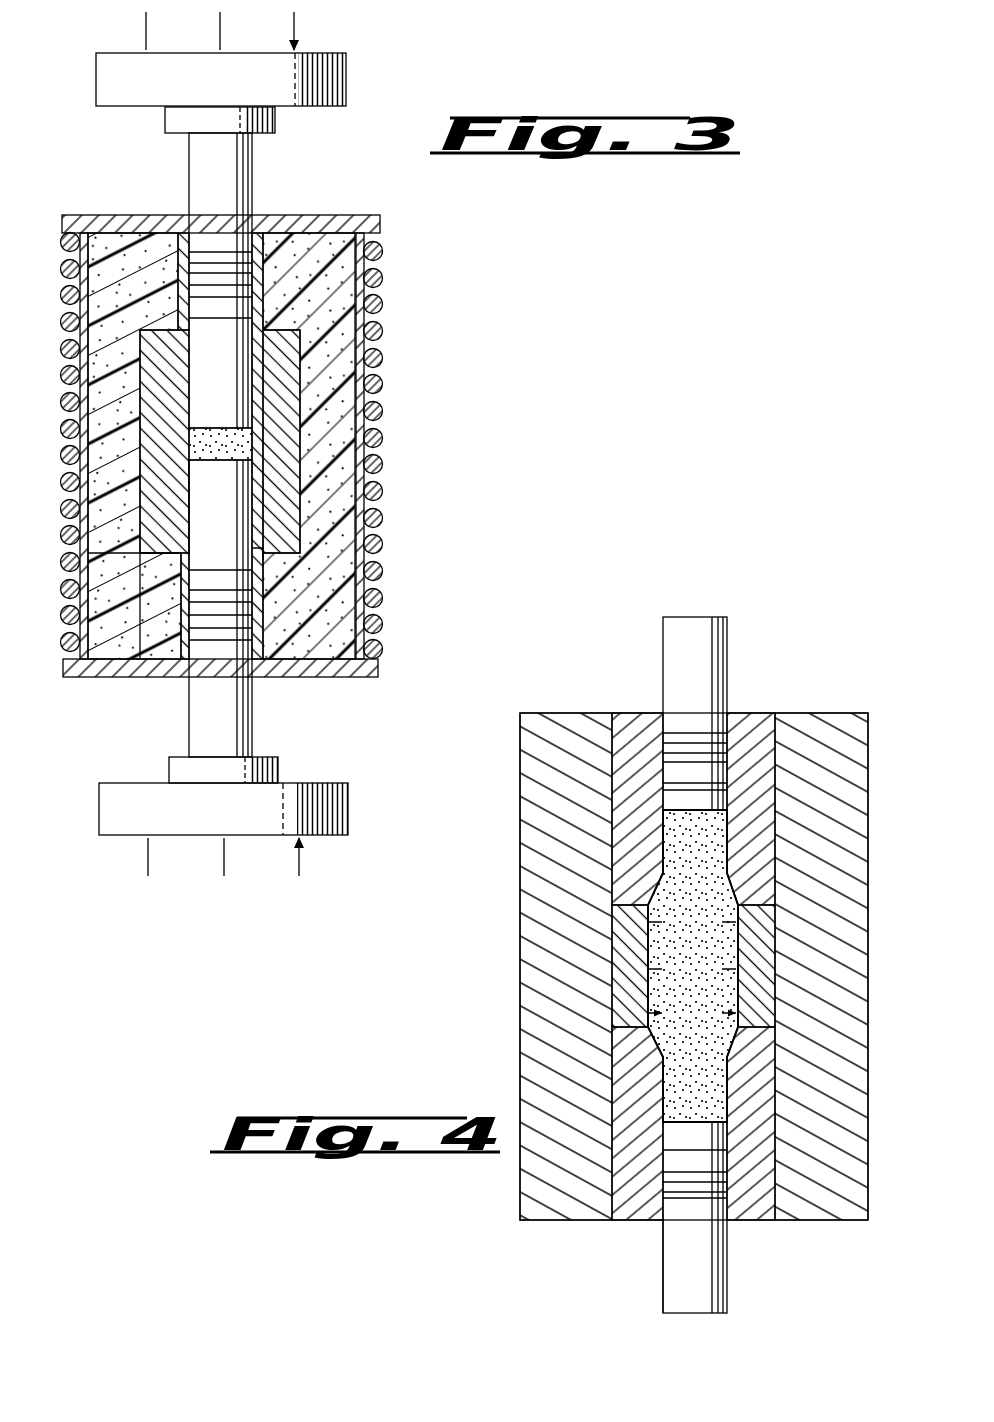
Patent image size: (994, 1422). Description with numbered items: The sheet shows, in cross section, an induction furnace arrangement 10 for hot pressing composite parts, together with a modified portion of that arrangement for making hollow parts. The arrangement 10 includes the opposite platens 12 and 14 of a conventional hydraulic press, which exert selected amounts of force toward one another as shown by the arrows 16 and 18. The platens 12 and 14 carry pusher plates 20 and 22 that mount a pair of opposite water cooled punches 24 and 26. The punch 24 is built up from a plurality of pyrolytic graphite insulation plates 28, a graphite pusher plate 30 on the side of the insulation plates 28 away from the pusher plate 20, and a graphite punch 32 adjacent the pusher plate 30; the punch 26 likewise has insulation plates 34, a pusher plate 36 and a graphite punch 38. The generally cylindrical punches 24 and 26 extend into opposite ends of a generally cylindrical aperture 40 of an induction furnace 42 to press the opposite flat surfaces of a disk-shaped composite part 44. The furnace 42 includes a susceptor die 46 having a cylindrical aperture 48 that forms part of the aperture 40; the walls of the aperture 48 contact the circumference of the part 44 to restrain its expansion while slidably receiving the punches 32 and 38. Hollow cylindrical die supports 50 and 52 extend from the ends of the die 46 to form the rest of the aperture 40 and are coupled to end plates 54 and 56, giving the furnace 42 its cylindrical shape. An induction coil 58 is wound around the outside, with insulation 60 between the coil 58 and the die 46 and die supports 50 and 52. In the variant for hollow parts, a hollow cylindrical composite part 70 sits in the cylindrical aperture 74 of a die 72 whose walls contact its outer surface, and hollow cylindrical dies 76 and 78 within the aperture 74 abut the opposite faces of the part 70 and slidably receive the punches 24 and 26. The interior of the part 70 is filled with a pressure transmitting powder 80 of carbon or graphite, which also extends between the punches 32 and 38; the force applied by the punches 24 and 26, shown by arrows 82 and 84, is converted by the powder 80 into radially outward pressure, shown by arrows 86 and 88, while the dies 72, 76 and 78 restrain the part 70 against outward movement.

In FIG. 3, the induction furnace arrangement 10 is at (440, 352).
In FIG. 3, the platen 12 is at (96, 92).
In FIG. 3, the platen 14 is at (99, 815).
In FIG. 3, the arrow 16 is at (146, 22).
In FIG. 3, the arrow 18 is at (224, 855).
In FIG. 3, the pusher plate 20 is at (278, 122).
In FIG. 3, the pusher plate 22 is at (280, 766).
In FIG. 3, the water cooled punch 24 is at (255, 178).
In FIG. 4, the water cooled punch 24 is at (663, 655).
In FIG. 3, the water cooled punch 26 is at (257, 718).
In FIG. 4, the water cooled punch 26 is at (673, 1300).
In FIG. 3, the pyrolytic graphite insulation plates 28 is at (203, 268).
In FIG. 4, the pyrolytic graphite insulation plates 28 is at (712, 763).
In FIG. 3, the graphite pusher plate 30 is at (188, 308).
In FIG. 4, the graphite pusher plate 30 is at (677, 779).
In FIG. 3, the graphite punch 32 is at (197, 386).
In FIG. 4, the graphite punch 32 is at (670, 800).
In FIG. 3, the insulation plates 34 is at (200, 593).
In FIG. 4, the insulation plates 34 is at (700, 1200).
In FIG. 3, the pusher plate 36 is at (187, 550).
In FIG. 4, the pusher plate 36 is at (733, 1160).
In FIG. 3, the graphite punch 38 is at (205, 475).
In FIG. 4, the graphite punch 38 is at (733, 1137).
In FIG. 3, the aperture 40 is at (210, 650).
In FIG. 3, the induction furnace 42 is at (388, 667).
In FIG. 3, the composite part 44 is at (233, 449).
In FIG. 3, the susceptor die 46 is at (290, 500).
In FIG. 3, the aperture 48 is at (240, 517).
In FIG. 3, the die support 50 is at (185, 283).
In FIG. 3, the die support 52 is at (173, 627).
In FIG. 3, the end plate 54 is at (366, 216).
In FIG. 3, the end plate 56 is at (374, 679).
In FIG. 3, the induction coil 58 is at (367, 407).
In FIG. 3, the insulation 60 is at (325, 292).
In FIG. 4, the composite part 70 is at (618, 965).
In FIG. 4, the die 72 is at (545, 905).
In FIG. 4, the aperture 74 is at (624, 1074).
In FIG. 4, the die 76 is at (765, 730).
In FIG. 4, the die 78 is at (638, 1212).
In FIG. 4, the pressure transmitting powder 80 is at (655, 995).
In FIG. 4, the arrow 82 is at (695, 578).
In FIG. 4, the arrow 84 is at (695, 1316).
In FIG. 4, the arrow 86 is at (660, 926).
In FIG. 4, the arrow 88 is at (727, 926).